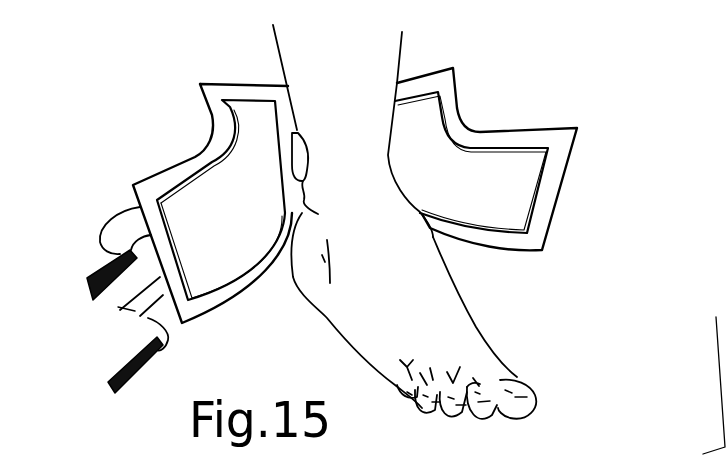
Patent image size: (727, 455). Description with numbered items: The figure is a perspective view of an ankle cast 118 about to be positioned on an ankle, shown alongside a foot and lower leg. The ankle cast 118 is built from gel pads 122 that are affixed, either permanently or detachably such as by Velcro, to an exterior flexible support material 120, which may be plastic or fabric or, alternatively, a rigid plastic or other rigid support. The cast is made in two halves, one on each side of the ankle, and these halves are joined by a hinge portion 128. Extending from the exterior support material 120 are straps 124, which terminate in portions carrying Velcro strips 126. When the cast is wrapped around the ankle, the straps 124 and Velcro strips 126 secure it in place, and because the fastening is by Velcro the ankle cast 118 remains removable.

The ankle cast 118 is at (491, 139).
The exterior flexible support material 120 is at (505, 138).
The gel pads 122 is at (223, 215).
The straps 124 is at (125, 312).
The Velcro strips 126 is at (136, 385).
The hinge portion 128 is at (287, 100).